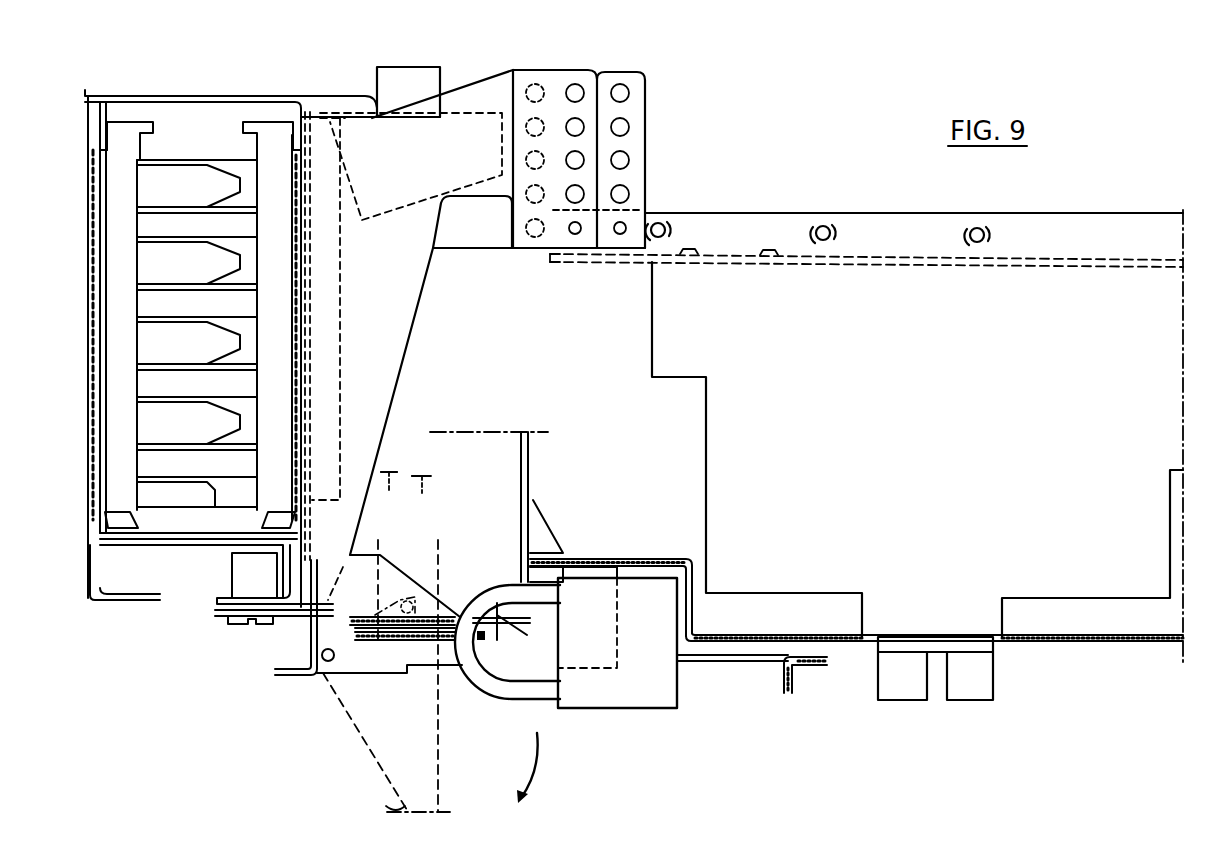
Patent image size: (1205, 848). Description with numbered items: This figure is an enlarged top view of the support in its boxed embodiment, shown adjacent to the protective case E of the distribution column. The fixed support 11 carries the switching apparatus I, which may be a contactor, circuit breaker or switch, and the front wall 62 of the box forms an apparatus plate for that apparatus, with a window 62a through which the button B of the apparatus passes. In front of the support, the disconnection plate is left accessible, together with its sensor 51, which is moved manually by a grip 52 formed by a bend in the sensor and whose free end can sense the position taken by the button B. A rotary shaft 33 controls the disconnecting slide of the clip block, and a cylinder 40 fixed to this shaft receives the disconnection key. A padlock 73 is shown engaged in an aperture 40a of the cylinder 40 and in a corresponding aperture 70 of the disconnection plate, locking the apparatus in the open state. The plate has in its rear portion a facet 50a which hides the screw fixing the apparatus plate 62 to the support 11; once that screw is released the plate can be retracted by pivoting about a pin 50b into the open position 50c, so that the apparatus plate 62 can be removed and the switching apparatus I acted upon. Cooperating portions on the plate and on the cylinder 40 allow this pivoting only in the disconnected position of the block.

The fixed support 11 is at (382, 343).
The rotary shaft 33 is at (430, 478).
The aperture of the disconnection plate 70 is at (456, 604).
The padlock 73 is at (648, 698).
The facet 50a is at (580, 562).
The pin 50b is at (325, 666).
The open position 50c is at (421, 786).
The cylinder 40 is at (407, 667).
The aperture of the cylinder 40a is at (476, 643).
The sensor 51 is at (724, 662).
The grip 52 is at (782, 696).
The front wall 62 is at (1077, 644).
The window 62a is at (873, 634).
The protective case E is at (86, 402).
The switching apparatus I is at (947, 457).
The button B is at (912, 688).